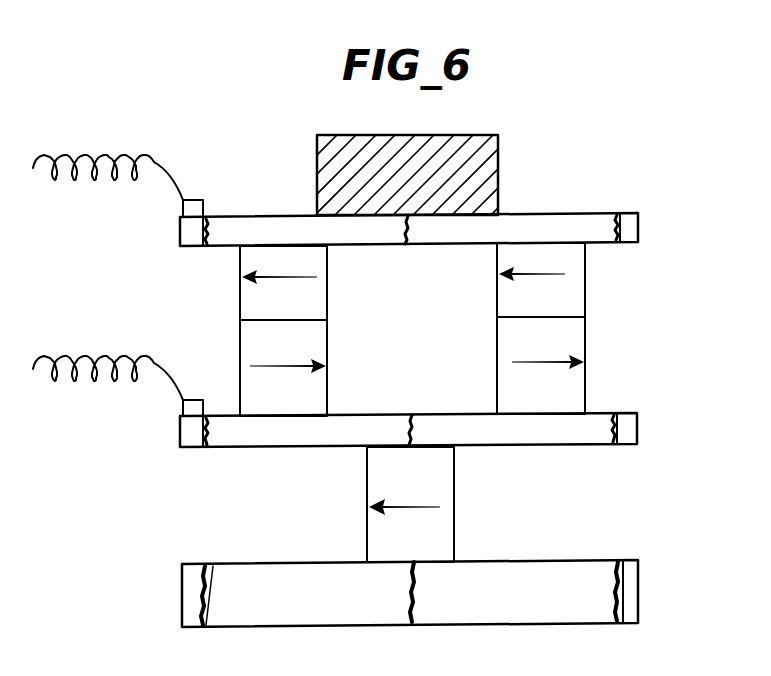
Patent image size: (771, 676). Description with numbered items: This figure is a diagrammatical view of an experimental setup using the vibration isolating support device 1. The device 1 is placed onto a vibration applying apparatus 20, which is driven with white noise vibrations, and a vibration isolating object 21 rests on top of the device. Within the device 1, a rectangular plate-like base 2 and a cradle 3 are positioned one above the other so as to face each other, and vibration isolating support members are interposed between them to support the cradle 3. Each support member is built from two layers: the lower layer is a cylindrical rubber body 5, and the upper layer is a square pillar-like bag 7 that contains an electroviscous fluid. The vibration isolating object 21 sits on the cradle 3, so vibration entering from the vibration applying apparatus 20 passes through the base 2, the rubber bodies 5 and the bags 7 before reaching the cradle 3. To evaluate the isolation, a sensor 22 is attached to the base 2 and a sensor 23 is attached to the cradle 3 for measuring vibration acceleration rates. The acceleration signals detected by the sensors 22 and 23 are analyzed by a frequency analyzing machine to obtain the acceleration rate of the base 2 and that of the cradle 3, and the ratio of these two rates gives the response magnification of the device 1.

The vibration isolating support device 1 is at (660, 198).
The base 2 is at (637, 428).
The cradle 3 is at (640, 232).
The cylindrical rubber body 5 is at (327, 370).
The square pillar-like bag 7 is at (327, 288).
The vibration applying apparatus 20 is at (575, 560).
The vibration isolating object 21 is at (498, 165).
The sensor 22 is at (197, 400).
The sensor 23 is at (204, 199).